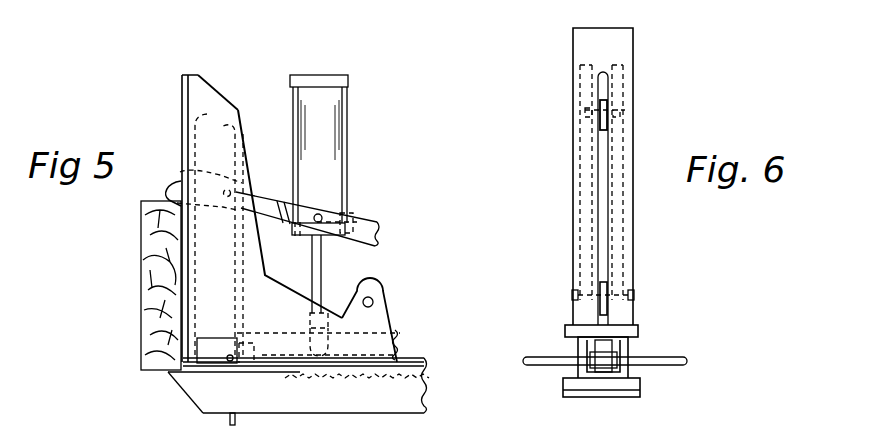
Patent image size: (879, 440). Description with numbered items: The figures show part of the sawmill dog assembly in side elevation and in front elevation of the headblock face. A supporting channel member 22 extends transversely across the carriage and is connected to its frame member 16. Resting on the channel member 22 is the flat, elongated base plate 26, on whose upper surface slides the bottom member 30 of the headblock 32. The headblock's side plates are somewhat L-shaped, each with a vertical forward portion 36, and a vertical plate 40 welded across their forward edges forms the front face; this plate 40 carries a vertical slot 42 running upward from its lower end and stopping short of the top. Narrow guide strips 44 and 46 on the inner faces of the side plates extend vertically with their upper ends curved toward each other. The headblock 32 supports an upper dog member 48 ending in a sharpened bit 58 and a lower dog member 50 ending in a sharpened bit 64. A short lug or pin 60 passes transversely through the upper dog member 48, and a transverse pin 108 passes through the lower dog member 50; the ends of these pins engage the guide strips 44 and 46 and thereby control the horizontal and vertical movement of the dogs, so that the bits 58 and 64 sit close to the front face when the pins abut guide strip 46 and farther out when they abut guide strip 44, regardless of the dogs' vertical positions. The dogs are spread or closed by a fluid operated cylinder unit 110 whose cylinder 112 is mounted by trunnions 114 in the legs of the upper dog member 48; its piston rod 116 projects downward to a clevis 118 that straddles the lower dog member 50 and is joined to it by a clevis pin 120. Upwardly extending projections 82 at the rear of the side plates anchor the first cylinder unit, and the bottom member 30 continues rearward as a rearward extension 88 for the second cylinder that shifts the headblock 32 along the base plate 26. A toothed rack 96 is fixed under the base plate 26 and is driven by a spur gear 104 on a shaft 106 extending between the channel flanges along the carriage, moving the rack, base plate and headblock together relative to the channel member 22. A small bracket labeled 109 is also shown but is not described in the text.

In FIG. 5, the frame member 16 is at (236, 421).
In FIG. 6, the frame member 16 is at (637, 388).
In FIG. 5, the supporting channel member 22 is at (198, 401).
In FIG. 6, the supporting channel member 22 is at (575, 348).
In FIG. 5, the base plate 26 is at (430, 367).
In FIG. 6, the base plate 26 is at (607, 364).
In FIG. 6, the bottom member 30 is at (576, 324).
In FIG. 5, the headblock 32 is at (251, 114).
In FIG. 5, the vertical forward portion 36 is at (201, 91).
In FIG. 5, the vertical plate 40 is at (181, 87).
In FIG. 6, the vertical slot 42 is at (603, 208).
In FIG. 5, the guide strip 44 is at (197, 131).
In FIG. 5, the guide strip 46 is at (238, 138).
In FIG. 5, the upper dog member 48 is at (377, 217).
In FIG. 6, the upper dog member 48 is at (603, 103).
In FIG. 5, the lower dog member 50 is at (398, 333).
In FIG. 6, the lower dog member 50 is at (608, 287).
In FIG. 5, the sharpened bit 58 is at (175, 195).
In FIG. 6, the sharpened bit 58 is at (608, 129).
In FIG. 5, the lug or pin 60 is at (245, 170).
In FIG. 6, the lug or pin 60 is at (643, 104).
In FIG. 5, the sharpened bit 64 is at (180, 372).
In FIG. 5, the projection 82 is at (379, 288).
In FIG. 5, the rearward extension 88 is at (421, 359).
In FIG. 5, the toothed rack 96 is at (424, 389).
In FIG. 6, the spur gear 104 is at (615, 354).
In FIG. 6, the shaft 106 is at (668, 357).
In FIG. 5, the transverse pin 108 is at (262, 338).
In FIG. 6, the transverse pin 108 is at (635, 296).
In FIG. 5, the guide bracket 109 is at (206, 338).
In FIG. 6, the guide bracket 109 is at (576, 289).
In FIG. 5, the fluid operated cylinder unit 110 is at (353, 121).
In FIG. 5, the cylinder 112 is at (336, 97).
In FIG. 5, the trunnion 114 is at (323, 217).
In FIG. 5, the piston rod 116 is at (332, 260).
In FIG. 5, the clevis 118 is at (336, 344).
In FIG. 5, the clevis pin 120 is at (302, 394).